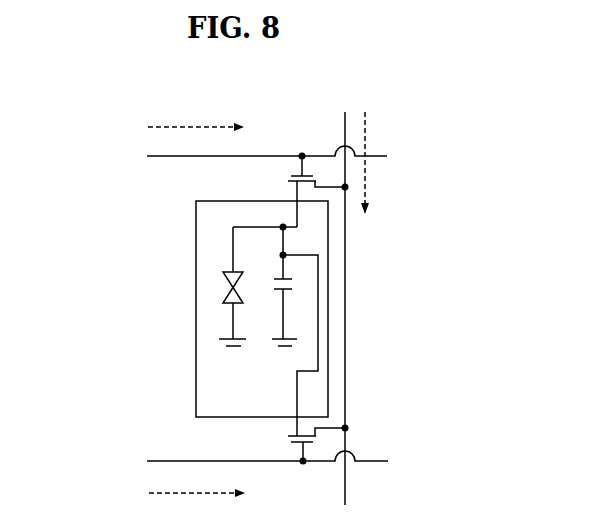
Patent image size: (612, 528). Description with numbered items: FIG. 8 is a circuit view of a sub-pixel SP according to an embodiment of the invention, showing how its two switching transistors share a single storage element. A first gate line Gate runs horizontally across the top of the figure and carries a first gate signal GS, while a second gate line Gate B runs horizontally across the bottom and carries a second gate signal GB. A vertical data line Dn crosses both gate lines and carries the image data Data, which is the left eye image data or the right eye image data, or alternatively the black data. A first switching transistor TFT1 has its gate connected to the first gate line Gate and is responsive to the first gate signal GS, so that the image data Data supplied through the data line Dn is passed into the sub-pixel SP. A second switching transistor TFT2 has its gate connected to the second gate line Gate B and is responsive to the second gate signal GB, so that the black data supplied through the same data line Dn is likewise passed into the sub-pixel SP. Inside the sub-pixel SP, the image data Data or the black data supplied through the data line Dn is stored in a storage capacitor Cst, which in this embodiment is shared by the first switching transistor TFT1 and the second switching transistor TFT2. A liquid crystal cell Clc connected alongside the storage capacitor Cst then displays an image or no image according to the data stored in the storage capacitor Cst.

The first gate line Gate is at (242, 155).
The first gate signal GS is at (212, 126).
The second gate line Gate B is at (230, 460).
The second gate signal GB is at (213, 492).
The data line Dn is at (347, 294).
The image data Data is at (373, 193).
The sub-pixel SP is at (147, 294).
The first switching transistor TFT1 is at (294, 190).
The second switching transistor TFT2 is at (295, 445).
The liquid crystal cell Clc is at (222, 309).
The storage capacitor Cst is at (294, 312).